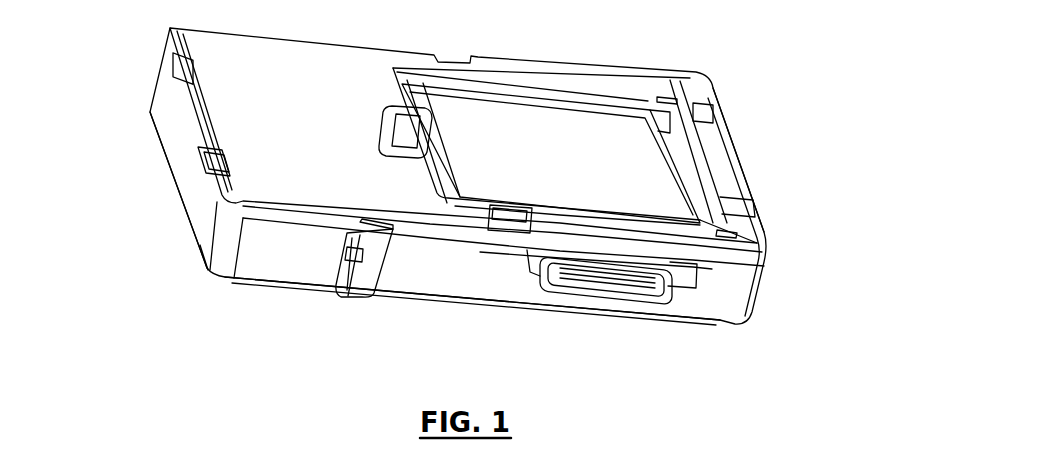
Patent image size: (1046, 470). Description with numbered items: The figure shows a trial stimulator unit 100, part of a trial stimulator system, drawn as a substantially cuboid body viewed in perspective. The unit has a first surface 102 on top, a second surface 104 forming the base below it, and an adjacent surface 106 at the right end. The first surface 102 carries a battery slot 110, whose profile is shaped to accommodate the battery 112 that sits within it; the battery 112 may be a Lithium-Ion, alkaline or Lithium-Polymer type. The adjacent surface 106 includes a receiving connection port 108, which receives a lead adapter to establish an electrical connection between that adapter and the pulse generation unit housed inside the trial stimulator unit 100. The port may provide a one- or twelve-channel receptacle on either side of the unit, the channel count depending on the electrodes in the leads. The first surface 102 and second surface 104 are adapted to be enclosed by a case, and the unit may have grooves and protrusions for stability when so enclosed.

The trial stimulator unit 100 is at (862, 107).
The first surface 102 is at (220, 83).
The second surface 104 is at (230, 280).
The adjacent surface 106 is at (727, 287).
The receiving connection port 108 is at (640, 293).
The battery slot 110 is at (623, 92).
The battery 112 is at (643, 173).